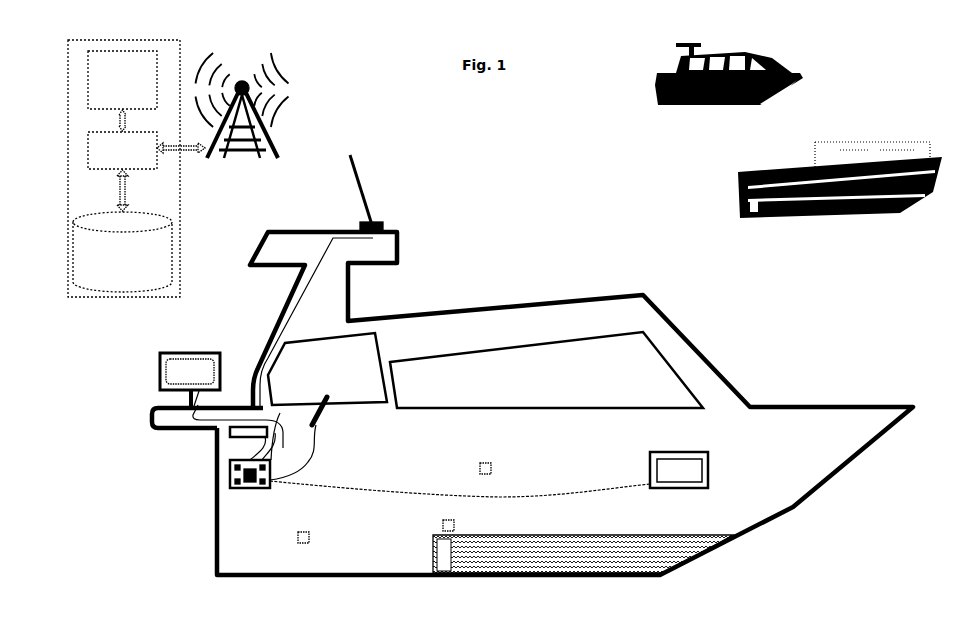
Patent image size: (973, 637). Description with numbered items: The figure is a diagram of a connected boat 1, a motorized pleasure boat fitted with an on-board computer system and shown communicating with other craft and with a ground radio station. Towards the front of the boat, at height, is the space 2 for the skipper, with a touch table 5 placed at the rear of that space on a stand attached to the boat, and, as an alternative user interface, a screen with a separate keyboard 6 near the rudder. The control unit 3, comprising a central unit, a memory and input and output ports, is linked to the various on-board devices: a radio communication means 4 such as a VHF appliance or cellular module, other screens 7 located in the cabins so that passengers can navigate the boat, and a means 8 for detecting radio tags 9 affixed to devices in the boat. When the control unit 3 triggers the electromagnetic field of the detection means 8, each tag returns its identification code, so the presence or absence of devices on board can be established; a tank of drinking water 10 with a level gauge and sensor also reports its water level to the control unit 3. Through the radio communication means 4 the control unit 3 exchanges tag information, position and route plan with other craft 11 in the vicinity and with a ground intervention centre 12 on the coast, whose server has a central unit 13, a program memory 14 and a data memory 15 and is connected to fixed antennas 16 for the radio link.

The boat 1 is at (782, 345).
The space for the skipper 2 is at (317, 358).
The control unit 3 is at (228, 489).
The radio communication means 4 is at (389, 222).
The touch table 5 is at (161, 382).
The keyboard 6 is at (321, 397).
The screens 7 is at (711, 478).
The detection means 8 is at (228, 438).
The radio tags 9 is at (478, 476).
The tank of drinking water 10 is at (688, 544).
The other craft 11 is at (798, 139).
The ground intervention centre 12 is at (124, 182).
The central unit 13 is at (123, 164).
The program memory 14 is at (132, 80).
The data memory 15 is at (122, 243).
The fixed antennas 16 is at (242, 96).